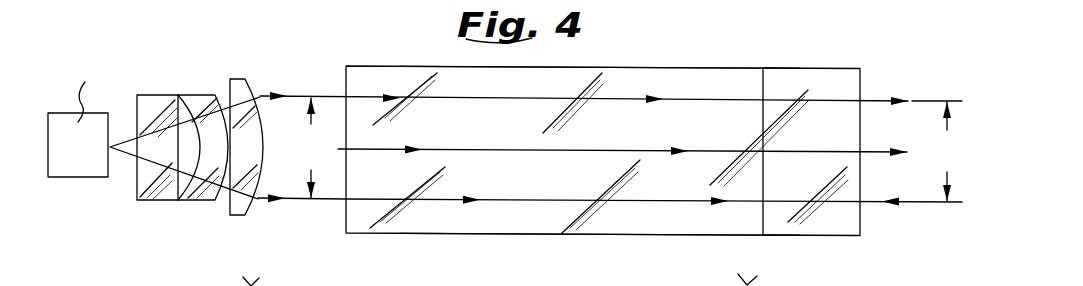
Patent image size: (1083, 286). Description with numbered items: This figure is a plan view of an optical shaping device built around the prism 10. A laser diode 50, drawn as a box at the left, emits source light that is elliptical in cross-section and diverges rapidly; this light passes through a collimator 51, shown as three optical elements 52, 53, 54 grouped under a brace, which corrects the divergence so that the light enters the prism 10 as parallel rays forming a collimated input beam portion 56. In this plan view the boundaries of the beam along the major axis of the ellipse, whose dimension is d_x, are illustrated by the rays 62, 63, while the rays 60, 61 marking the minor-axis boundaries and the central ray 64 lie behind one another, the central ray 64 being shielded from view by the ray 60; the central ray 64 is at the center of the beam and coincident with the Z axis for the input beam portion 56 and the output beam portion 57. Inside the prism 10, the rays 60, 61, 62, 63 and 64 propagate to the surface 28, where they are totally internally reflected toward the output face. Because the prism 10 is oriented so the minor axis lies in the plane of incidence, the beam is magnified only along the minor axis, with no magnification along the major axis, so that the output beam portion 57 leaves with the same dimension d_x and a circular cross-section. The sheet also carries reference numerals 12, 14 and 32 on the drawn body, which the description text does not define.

The prism 10 is at (727, 53).
The lower surface of plate 12 is at (580, 235).
The upper surface of plate 14 is at (620, 66).
The surface 28 is at (632, 137).
The end section of plate 32 is at (816, 77).
The laser diode 50 is at (72, 168).
The collimator 51 is at (256, 222).
The optical element 52 is at (155, 105).
The optical element 53 is at (197, 100).
The optical element 54 is at (244, 92).
The input beam portion 56 is at (323, 211).
The output light beam portion 57 is at (872, 200).
The ray 60 is at (491, 137).
The ray 61 is at (601, 76).
The ray 62 is at (874, 101).
The ray 63 is at (440, 201).
The central ray 64 is at (873, 154).